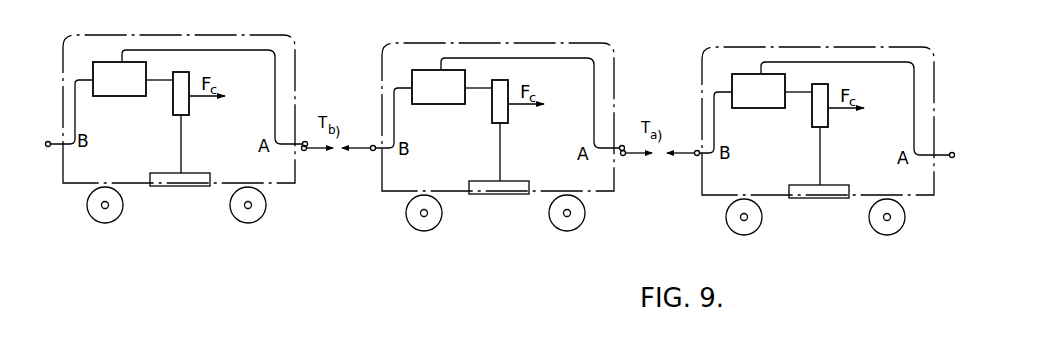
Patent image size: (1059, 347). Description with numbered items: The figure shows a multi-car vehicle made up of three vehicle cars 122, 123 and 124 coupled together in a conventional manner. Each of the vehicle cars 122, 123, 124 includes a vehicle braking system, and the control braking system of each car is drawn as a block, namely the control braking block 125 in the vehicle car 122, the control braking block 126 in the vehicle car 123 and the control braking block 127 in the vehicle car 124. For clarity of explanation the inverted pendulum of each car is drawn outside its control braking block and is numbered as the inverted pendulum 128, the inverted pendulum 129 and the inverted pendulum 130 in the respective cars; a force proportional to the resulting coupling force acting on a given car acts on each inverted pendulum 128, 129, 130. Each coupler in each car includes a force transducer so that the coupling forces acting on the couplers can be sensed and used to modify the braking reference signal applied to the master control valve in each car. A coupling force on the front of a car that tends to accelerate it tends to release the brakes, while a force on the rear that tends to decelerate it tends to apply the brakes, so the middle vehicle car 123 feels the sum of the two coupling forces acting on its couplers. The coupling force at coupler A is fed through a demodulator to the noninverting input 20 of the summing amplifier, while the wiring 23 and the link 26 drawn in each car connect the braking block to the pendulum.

The noninverting input 20 is at (120, 52).
The conductor wire 23 is at (85, 81).
The connecting link 26 is at (160, 81).
The vehicle car 122 is at (191, 232).
The vehicle car 123 is at (498, 142).
The vehicle car 124 is at (818, 146).
The control braking block 125 is at (124, 90).
The control braking block 126 is at (438, 107).
The control braking block 127 is at (758, 111).
The inverted pendulum 128 is at (183, 116).
The inverted pendulum 129 is at (519, 130).
The inverted pendulum 130 is at (839, 134).